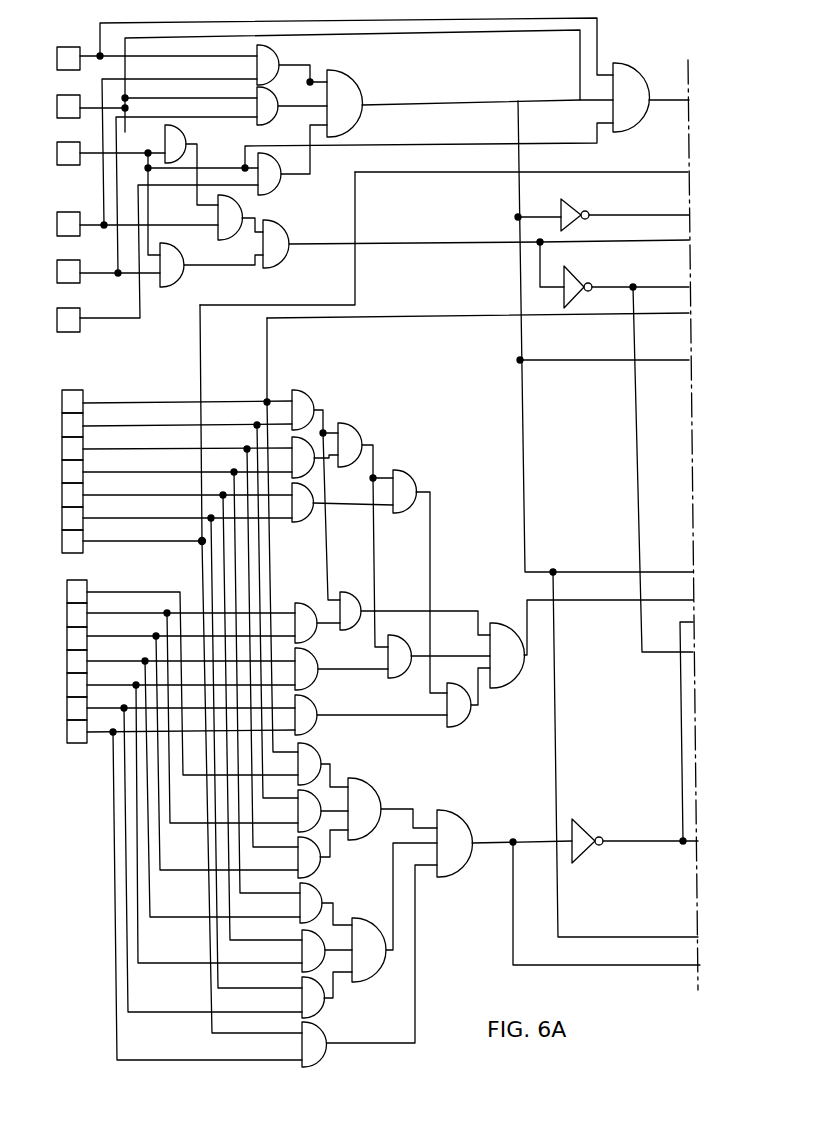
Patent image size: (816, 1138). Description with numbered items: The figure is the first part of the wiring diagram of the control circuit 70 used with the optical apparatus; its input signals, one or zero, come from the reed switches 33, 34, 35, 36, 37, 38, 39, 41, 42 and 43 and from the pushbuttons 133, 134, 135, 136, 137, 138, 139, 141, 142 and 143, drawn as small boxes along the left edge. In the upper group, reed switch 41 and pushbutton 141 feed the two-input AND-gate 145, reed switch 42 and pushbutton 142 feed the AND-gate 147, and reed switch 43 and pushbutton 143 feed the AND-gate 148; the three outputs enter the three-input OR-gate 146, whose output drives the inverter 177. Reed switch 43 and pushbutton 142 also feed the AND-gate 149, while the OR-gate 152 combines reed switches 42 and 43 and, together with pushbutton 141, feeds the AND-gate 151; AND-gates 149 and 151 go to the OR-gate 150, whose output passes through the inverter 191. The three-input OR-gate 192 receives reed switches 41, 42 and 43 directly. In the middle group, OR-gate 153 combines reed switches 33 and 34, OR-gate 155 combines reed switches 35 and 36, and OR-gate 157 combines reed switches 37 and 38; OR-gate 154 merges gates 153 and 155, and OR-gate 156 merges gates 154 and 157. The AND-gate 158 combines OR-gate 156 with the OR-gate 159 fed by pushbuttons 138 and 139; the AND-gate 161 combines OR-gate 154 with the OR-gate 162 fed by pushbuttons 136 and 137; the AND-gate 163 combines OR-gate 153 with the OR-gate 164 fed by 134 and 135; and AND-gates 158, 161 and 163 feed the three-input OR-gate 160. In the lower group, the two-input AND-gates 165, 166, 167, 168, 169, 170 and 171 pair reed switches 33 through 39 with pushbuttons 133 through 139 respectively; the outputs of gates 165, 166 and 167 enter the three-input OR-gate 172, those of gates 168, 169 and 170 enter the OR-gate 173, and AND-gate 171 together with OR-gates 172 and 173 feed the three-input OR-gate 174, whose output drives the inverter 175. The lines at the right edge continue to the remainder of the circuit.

The reed switch 41 is at (57, 52).
The reed switch 42 is at (57, 100).
The reed switch 43 is at (57, 147).
The pushbutton 141 is at (57, 216).
The pushbutton 142 is at (57, 265).
The pushbutton 143 is at (57, 313).
The two-input AND-gate 145 is at (270, 51).
The three-input OR-gate 146 is at (358, 78).
The two-input AND-gate 147 is at (268, 92).
The two-input AND-gate 148 is at (275, 180).
The two-input AND-gate 149 is at (180, 278).
The two-input OR-gate 150 is at (282, 262).
The two-input AND-gate 151 is at (222, 230).
The two-input OR-gate 152 is at (187, 131).
The three-input OR-gate 192 is at (622, 70).
The inverter 177 is at (575, 204).
The inverter 191 is at (576, 275).
The reed switch 33 is at (62, 392).
The reed switch 34 is at (62, 416).
The reed switch 35 is at (62, 440).
The reed switch 36 is at (62, 463).
The reed switch 37 is at (62, 487).
The reed switch 38 is at (62, 510).
The reed switch 39 is at (66, 553).
The pushbutton 133 is at (67, 584).
The pushbutton 134 is at (67, 612).
The pushbutton 135 is at (67, 632).
The pushbutton 136 is at (67, 660).
The pushbutton 137 is at (67, 684).
The pushbutton 138 is at (67, 708).
The pushbutton 139 is at (70, 742).
The two-input OR-gate 153 is at (297, 388).
The two-input OR-gate 154 is at (344, 424).
The two-input OR-gate 155 is at (317, 468).
The two-input OR-gate 156 is at (413, 478).
The two-input OR-gate 157 is at (300, 524).
The two-input AND-gate 158 is at (466, 716).
The two-input OR-gate 159 is at (322, 726).
The three-input OR-gate 160 is at (492, 627).
The two-input AND-gate 161 is at (404, 646).
The two-input OR-gate 162 is at (318, 684).
The two-input AND-gate 163 is at (350, 592).
The two-input OR-gate 164 is at (313, 637).
The two-input AND-gate 165 is at (320, 752).
The two-input AND-gate 166 is at (322, 828).
The two-input AND-gate 167 is at (318, 872).
The two-input AND-gate 168 is at (325, 896).
The two-input AND-gate 169 is at (330, 975).
The two-input AND-gate 170 is at (318, 1012).
The two-input AND-gate 171 is at (322, 1058).
The three-input OR-gate 172 is at (373, 792).
The three-input OR-gate 173 is at (383, 964).
The three-input OR-gate 174 is at (449, 816).
The inverter 175 is at (580, 824).
The control circuit 70 is at (597, 973).